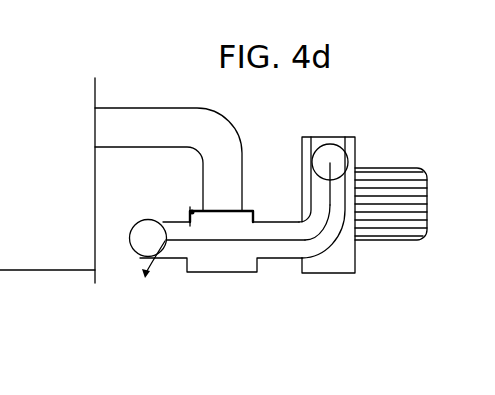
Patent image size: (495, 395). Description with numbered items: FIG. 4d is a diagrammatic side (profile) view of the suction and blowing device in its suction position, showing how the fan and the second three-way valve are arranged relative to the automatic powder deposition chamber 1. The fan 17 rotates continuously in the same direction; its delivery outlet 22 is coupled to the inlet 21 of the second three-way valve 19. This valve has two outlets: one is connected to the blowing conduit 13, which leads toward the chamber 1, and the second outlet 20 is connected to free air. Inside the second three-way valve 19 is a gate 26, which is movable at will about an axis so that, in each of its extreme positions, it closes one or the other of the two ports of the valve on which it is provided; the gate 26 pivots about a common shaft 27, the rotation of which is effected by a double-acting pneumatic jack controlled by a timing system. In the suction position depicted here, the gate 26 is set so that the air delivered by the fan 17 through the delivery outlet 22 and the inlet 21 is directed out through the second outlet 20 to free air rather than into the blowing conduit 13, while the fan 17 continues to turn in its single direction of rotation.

The automatic powder deposition chamber 1 is at (62, 257).
The blowing conduit 13 is at (140, 120).
The fan 17 is at (347, 263).
The second three-way valve 19 is at (218, 273).
The second outlet 20 is at (173, 249).
The inlet 21 is at (258, 249).
The delivery outlet 22 is at (338, 160).
The gate 26 is at (224, 210).
The common shaft 27 is at (191, 210).